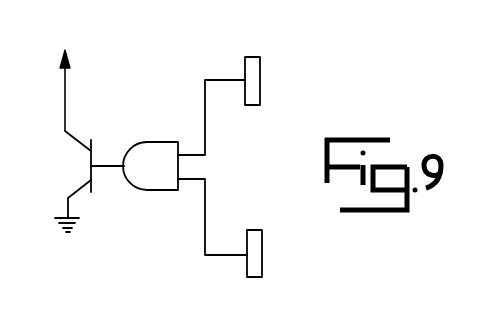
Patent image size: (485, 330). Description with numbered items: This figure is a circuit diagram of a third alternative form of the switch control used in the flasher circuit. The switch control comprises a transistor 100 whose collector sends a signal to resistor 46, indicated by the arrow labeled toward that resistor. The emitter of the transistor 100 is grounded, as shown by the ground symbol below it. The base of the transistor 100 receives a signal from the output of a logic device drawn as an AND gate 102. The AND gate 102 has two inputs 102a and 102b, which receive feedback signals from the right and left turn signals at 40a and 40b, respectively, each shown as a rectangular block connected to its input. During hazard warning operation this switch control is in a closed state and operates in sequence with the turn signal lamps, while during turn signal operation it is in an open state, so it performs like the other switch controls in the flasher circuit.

The resistor 46 is at (75, 78).
The transistor 100 is at (93, 146).
The AND gate 102 is at (160, 140).
The input 102a is at (182, 157).
The input 102b is at (181, 179).
The right turn signal 40a is at (260, 73).
The left turn signal 40b is at (295, 257).